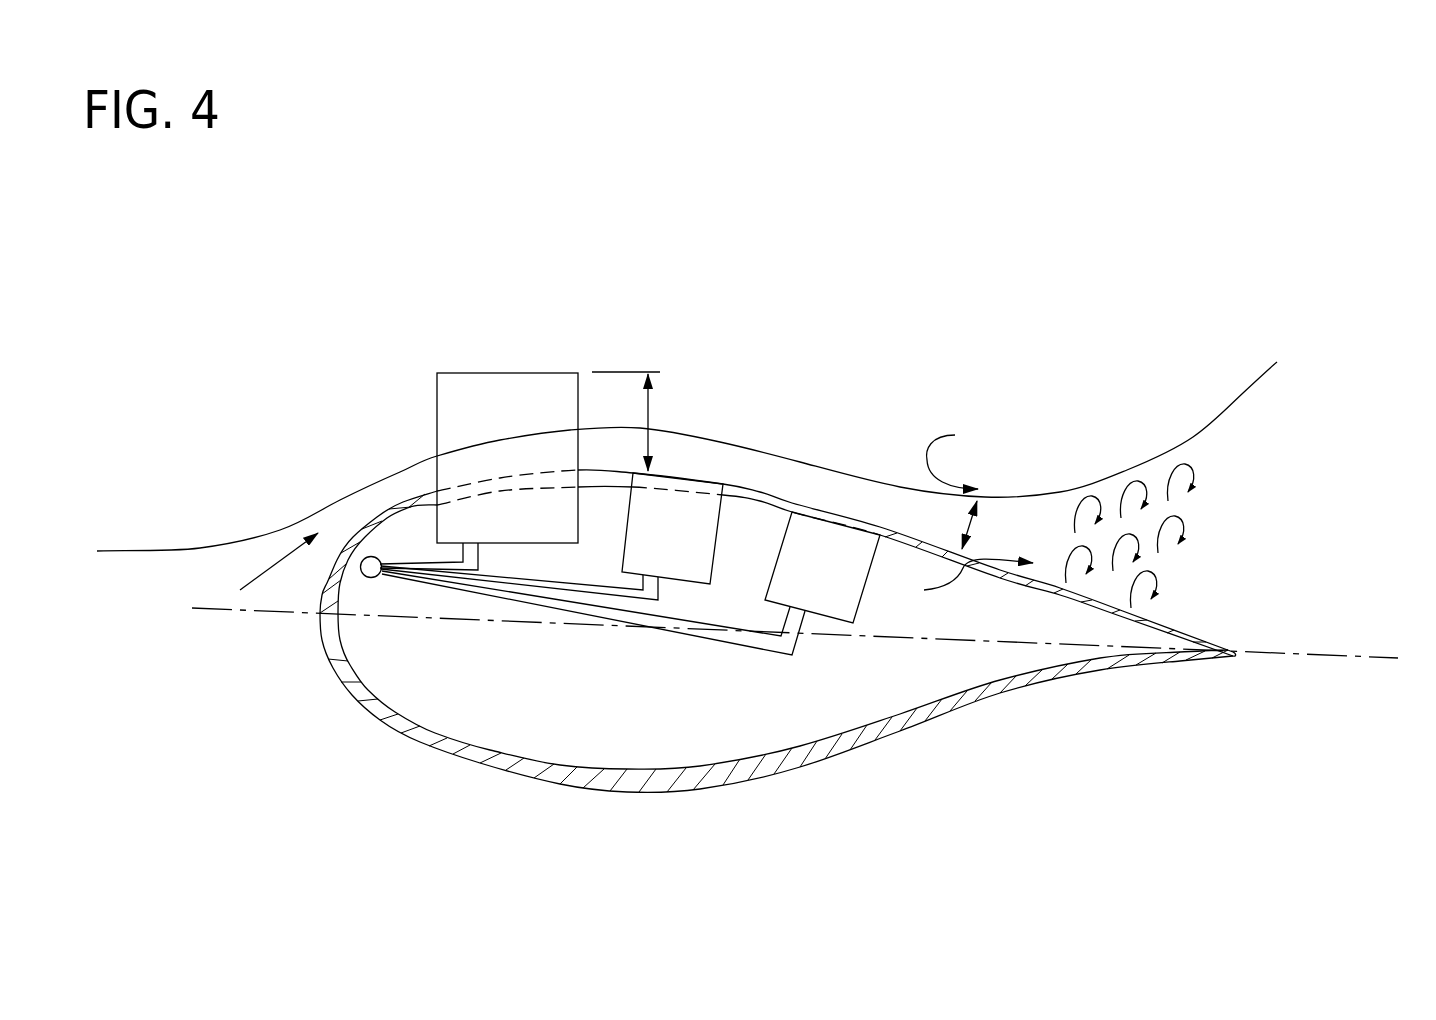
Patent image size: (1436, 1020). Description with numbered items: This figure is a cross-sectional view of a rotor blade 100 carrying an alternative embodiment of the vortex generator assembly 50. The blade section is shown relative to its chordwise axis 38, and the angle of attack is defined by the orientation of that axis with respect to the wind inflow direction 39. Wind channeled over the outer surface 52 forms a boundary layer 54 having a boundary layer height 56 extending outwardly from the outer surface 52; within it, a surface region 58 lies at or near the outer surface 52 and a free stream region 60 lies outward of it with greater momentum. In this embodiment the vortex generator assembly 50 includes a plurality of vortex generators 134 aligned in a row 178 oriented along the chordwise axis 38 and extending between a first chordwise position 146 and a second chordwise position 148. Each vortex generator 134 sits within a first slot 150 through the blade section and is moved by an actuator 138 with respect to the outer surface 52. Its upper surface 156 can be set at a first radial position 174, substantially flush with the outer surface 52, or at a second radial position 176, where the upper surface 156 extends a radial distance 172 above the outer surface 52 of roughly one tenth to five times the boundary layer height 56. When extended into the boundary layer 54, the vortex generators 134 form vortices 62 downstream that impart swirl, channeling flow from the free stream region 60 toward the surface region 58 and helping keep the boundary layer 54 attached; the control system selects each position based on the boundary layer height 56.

The chordwise axis 38 is at (1362, 656).
The wind inflow direction 39 is at (258, 578).
The vortex generator assembly 50 is at (925, 320).
The outer surface 52 is at (777, 499).
The boundary layer 54 is at (280, 530).
The boundary layer height 56 is at (967, 523).
The surface region 58 is at (960, 585).
The free stream region 60 is at (958, 452).
The vortices 62 is at (1193, 505).
The rotor blade 100 is at (1277, 310).
The vortex generator 134 is at (437, 393).
The actuator 138 is at (378, 587).
The first chordwise position 146 is at (513, 270).
The second chordwise position 148 is at (867, 423).
The first slot 150 is at (743, 495).
The upper surface 156 is at (538, 372).
The radial distance 172 is at (650, 408).
The first radial position 174 is at (737, 447).
The second radial position 176 is at (508, 330).
The row 178 is at (830, 308).